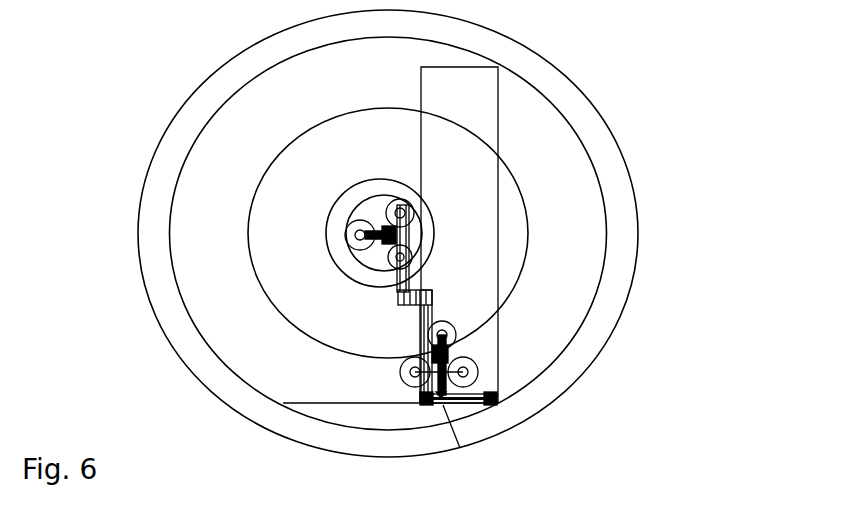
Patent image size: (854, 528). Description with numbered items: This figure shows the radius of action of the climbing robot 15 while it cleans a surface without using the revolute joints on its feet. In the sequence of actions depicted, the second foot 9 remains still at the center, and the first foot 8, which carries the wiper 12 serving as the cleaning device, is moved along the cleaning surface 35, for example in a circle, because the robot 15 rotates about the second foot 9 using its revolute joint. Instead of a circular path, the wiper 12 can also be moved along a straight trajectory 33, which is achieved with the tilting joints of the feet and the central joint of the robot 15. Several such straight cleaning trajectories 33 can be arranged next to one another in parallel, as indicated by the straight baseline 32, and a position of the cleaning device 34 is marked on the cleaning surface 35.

The first foot 8 is at (402, 375).
The second foot 9 is at (372, 206).
The wiper 12 is at (472, 405).
The climbing robot 15 is at (390, 322).
The baseline 32 is at (323, 402).
The straight trajectory 33 is at (498, 93).
The position of the cleaning device 34 is at (452, 430).
The cleaning surface 35 is at (630, 242).